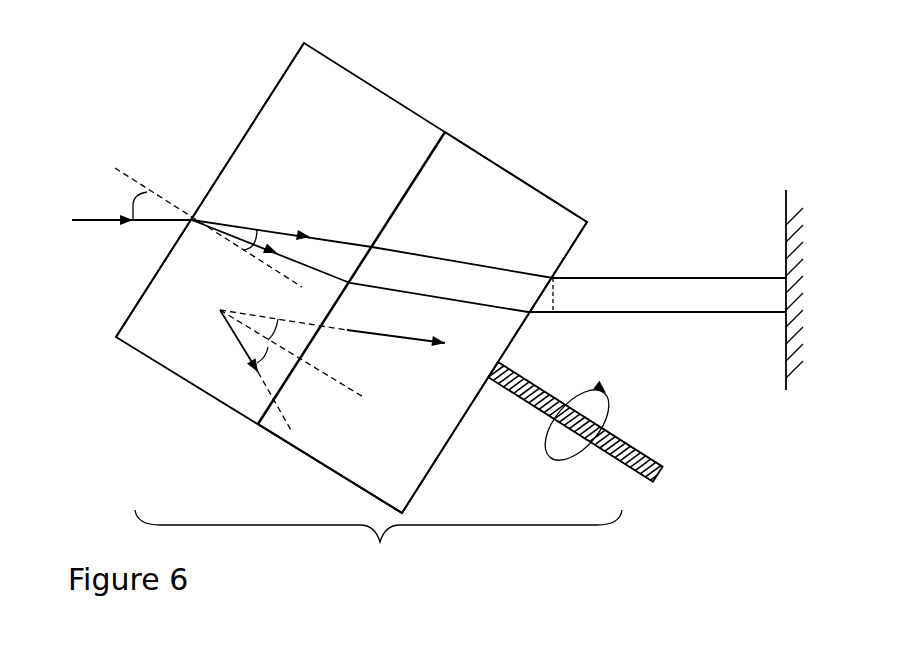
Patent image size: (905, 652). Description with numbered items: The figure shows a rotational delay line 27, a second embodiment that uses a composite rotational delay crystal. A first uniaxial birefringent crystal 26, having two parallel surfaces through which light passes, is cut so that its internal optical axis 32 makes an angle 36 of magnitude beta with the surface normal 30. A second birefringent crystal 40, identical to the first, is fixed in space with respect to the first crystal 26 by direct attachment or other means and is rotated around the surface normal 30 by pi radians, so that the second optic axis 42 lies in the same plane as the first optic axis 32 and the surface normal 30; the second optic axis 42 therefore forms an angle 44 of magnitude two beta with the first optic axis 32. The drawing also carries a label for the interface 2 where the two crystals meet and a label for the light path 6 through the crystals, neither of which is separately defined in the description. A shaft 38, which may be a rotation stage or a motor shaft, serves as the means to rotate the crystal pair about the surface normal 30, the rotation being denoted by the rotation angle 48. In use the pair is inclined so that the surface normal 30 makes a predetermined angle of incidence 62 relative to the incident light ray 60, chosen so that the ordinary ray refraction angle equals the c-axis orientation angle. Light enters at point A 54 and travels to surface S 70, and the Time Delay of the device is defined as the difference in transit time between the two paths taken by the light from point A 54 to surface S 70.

The interface between prisms 2 is at (279, 412).
The light beam 6 is at (265, 236).
The uniaxial birefringent crystal 26 is at (352, 128).
The second embodiment 27 is at (378, 542).
The surface normal 30 is at (128, 175).
The internal optical axis 32 is at (223, 328).
The angle 36 is at (258, 347).
The shaft 38 is at (643, 435).
The second birefringent crystal 40 is at (477, 205).
The second RDC optic axis 42 is at (383, 328).
The angle 44 is at (307, 405).
The rotation angle γ 48 is at (574, 435).
The point A 54 is at (186, 226).
The incident light ray 60 is at (90, 227).
The angle of incidence θ 62 is at (130, 195).
The surface S 70 is at (780, 208).